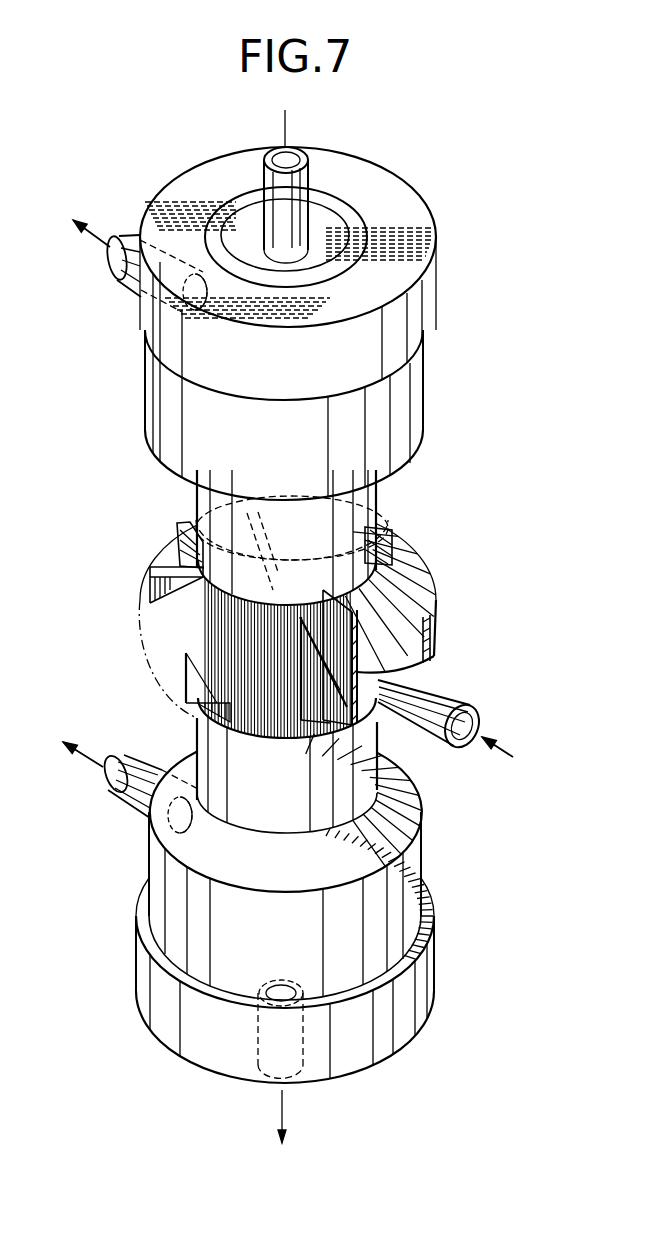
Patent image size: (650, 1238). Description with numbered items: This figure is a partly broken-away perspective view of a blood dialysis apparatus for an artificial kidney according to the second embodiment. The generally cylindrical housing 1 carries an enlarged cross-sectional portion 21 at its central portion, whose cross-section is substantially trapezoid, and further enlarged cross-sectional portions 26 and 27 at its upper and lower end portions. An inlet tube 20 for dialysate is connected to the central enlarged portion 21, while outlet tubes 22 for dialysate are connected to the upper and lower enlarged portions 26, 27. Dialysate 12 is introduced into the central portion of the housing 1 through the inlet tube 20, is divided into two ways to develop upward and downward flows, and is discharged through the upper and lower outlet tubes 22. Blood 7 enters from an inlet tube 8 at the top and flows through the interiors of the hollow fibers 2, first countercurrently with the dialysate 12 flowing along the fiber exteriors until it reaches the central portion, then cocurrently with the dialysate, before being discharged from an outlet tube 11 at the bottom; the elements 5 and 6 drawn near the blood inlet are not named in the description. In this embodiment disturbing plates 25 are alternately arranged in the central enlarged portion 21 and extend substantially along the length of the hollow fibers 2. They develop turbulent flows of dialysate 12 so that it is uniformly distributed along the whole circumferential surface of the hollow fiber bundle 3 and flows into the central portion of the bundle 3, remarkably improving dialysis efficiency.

The housing 1 is at (424, 403).
The hollow fibers 2 is at (262, 729).
The hollow fiber bundle 3 is at (200, 722).
The annular groove 5 is at (315, 258).
The annular ring 6 is at (254, 220).
The blood 7 is at (288, 122).
The inlet tube 8 is at (300, 196).
The outlet tube 11 is at (305, 1055).
The dialysate 12 is at (95, 242).
The inlet tube for dialysate 20 is at (435, 698).
The enlarged cross-sectional portion 21 is at (157, 647).
The outlet tubes for dialysate 22 is at (118, 278).
The disturbing plates 25 is at (273, 608).
The upper enlarged cross-sectional portion 26 is at (398, 448).
The lower enlarged cross-sectional portion 27 is at (398, 876).